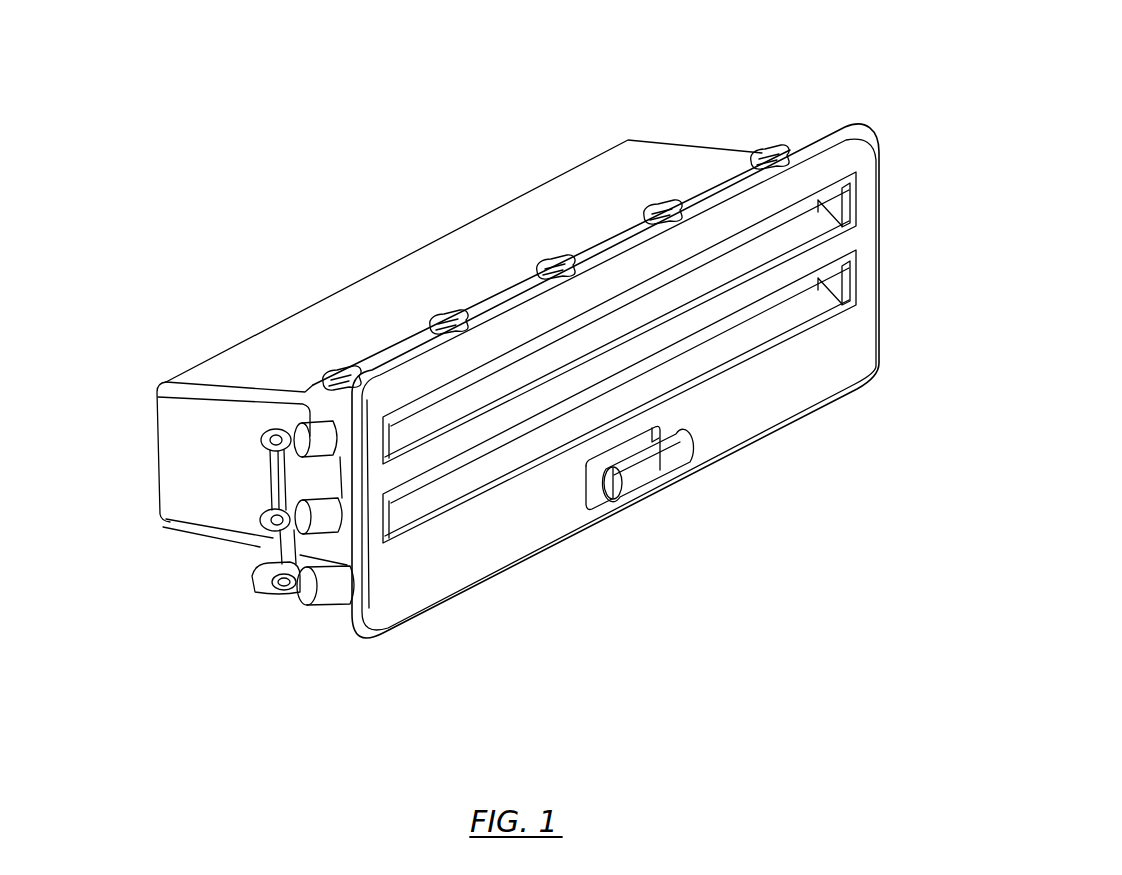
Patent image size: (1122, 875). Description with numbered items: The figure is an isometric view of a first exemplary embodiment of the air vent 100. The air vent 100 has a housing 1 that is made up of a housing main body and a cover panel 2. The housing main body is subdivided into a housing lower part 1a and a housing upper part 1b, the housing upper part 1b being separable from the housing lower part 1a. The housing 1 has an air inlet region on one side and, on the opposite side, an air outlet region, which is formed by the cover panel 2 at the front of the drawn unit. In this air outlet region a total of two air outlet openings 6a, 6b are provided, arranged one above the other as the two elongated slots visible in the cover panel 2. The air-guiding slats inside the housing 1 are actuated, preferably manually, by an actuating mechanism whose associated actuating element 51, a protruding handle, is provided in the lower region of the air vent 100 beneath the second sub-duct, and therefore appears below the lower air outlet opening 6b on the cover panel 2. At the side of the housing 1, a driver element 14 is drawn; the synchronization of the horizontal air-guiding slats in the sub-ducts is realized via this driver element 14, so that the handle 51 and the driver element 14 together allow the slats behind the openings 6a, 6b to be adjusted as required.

The air vent 100 is at (487, 103).
The housing 1 is at (190, 463).
The housing lower part 1a is at (227, 528).
The housing upper part 1b is at (293, 362).
The cover panel 2 is at (455, 350).
The air outlet opening 6a is at (828, 213).
The air outlet opening 6b is at (830, 295).
The driver element 14 is at (283, 543).
The actuating element 51 is at (657, 472).